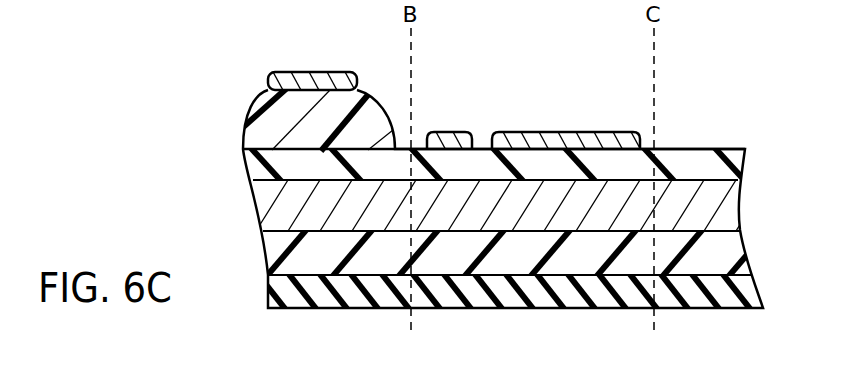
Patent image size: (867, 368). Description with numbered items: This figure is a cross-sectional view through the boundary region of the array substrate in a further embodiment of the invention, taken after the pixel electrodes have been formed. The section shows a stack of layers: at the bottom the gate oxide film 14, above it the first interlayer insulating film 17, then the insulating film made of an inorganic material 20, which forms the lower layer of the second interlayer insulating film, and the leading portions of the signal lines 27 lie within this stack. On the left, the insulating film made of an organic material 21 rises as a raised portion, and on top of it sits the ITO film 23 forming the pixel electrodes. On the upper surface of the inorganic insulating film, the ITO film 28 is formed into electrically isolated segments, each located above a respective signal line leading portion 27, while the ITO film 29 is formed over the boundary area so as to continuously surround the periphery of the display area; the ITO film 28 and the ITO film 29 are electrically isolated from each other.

The gate oxide film 14 is at (437, 293).
The first interlayer insulating film 17 is at (500, 260).
The insulating film made of an inorganic material 20 is at (617, 163).
The insulating film made of an organic material 21 is at (285, 118).
The ITO film forming the pixel electrodes 23 is at (331, 72).
The leading portions of the signal lines 27 is at (558, 222).
The ITO film 28 is at (576, 132).
The ITO film 29 is at (448, 132).